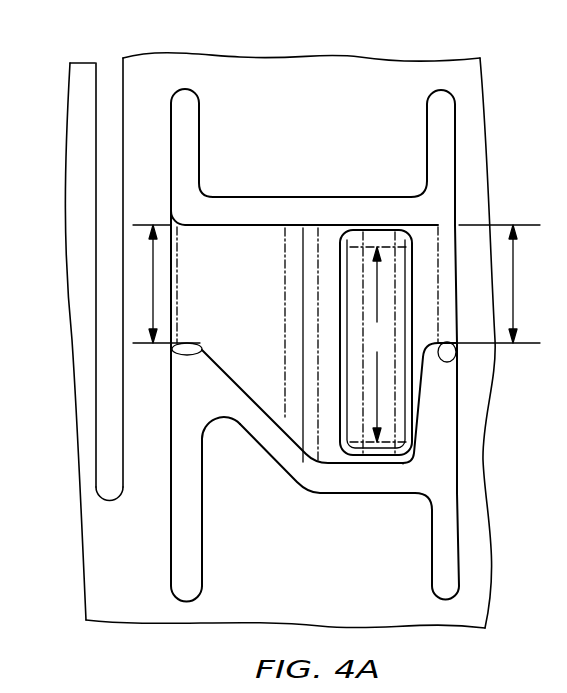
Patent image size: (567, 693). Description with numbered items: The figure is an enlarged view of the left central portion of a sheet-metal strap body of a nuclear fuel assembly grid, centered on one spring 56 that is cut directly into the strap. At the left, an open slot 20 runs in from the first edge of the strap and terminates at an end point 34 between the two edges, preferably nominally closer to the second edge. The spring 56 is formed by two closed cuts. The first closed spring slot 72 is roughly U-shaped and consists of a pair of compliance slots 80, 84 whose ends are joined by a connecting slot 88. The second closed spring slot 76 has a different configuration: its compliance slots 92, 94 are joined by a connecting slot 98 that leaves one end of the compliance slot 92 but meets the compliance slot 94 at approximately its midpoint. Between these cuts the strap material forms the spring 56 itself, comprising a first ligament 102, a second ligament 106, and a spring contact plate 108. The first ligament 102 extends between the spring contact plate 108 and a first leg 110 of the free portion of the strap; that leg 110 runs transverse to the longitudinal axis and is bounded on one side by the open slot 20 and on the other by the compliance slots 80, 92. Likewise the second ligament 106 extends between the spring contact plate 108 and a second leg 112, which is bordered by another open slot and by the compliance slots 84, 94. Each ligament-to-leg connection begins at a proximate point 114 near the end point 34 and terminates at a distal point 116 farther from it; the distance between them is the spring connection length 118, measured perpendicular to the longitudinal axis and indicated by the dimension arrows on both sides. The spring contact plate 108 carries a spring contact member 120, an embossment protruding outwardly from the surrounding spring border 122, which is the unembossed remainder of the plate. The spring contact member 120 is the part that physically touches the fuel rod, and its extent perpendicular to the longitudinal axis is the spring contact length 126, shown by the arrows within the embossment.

The open slot 20 is at (97, 112).
The end point 34 is at (108, 500).
The spring 56 is at (293, 196).
The first closed spring slot 72 is at (322, 193).
The second closed spring slot 76 is at (250, 442).
The compliance slot 80 is at (178, 92).
The compliance slot 84 is at (437, 86).
The connecting slot 88 is at (236, 196).
The compliance slot 92 is at (190, 592).
The compliance slot 94 is at (446, 597).
The connecting slot 98 is at (343, 493).
The first ligament 102 is at (233, 378).
The second ligament 106 is at (433, 355).
The spring contact plate 108 is at (385, 463).
The first leg 110 is at (141, 105).
The second leg 112 is at (477, 108).
The proximate point 114 is at (203, 345).
The distal point 116 is at (175, 215).
The spring connection length 118 is at (153, 278).
The spring contact member 120 is at (341, 365).
The spring border 122 is at (355, 463).
The spring contact length 126 is at (378, 344).